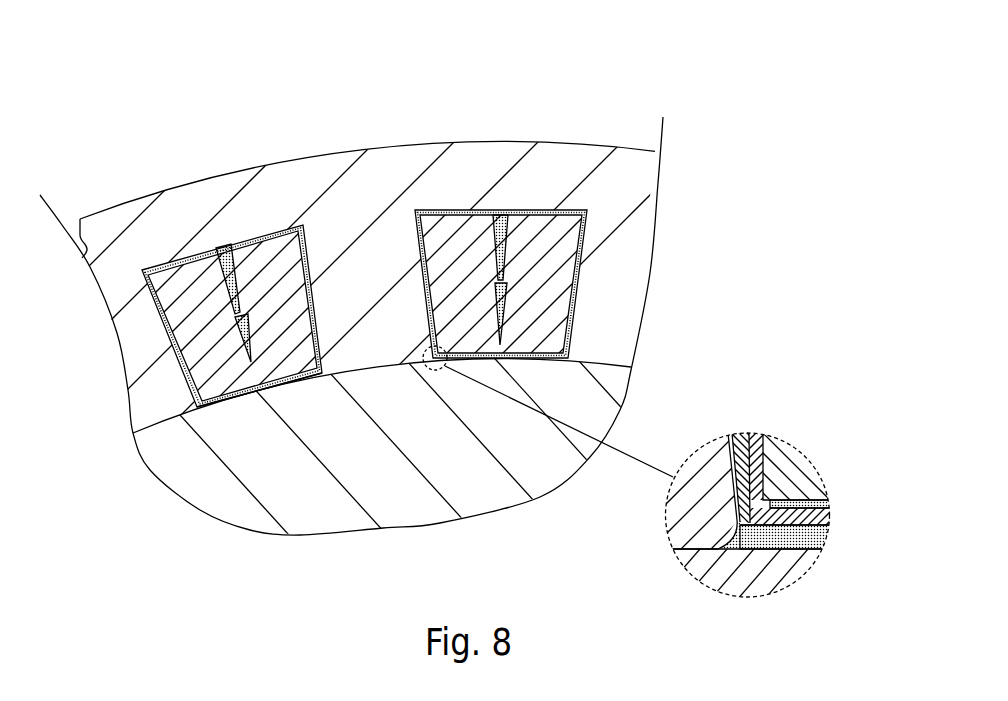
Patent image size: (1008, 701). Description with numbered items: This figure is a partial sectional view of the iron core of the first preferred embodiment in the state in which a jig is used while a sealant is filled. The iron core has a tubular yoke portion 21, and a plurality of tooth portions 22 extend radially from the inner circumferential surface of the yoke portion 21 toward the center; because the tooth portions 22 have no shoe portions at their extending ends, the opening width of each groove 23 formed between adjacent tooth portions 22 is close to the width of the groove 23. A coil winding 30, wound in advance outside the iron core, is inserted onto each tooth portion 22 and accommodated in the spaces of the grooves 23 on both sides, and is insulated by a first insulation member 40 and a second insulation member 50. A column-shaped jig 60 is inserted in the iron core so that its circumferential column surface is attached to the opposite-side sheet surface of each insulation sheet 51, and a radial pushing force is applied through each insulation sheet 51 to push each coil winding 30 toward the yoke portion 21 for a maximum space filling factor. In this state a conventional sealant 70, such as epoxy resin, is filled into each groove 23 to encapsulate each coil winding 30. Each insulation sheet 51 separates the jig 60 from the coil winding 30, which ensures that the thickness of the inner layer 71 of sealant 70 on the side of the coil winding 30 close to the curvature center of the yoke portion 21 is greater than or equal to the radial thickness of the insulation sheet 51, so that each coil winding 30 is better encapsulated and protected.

The yoke portion 21 is at (193, 208).
The tooth portion 22 is at (713, 477).
The groove 23 is at (500, 213).
The coil winding 30 is at (453, 233).
The first insulation member 40 is at (546, 211).
The second insulation member 50 is at (258, 392).
The insulation sheet 51 is at (810, 513).
The jig 60 is at (313, 507).
The sealant 70 is at (737, 555).
The inner layer 71 is at (798, 532).